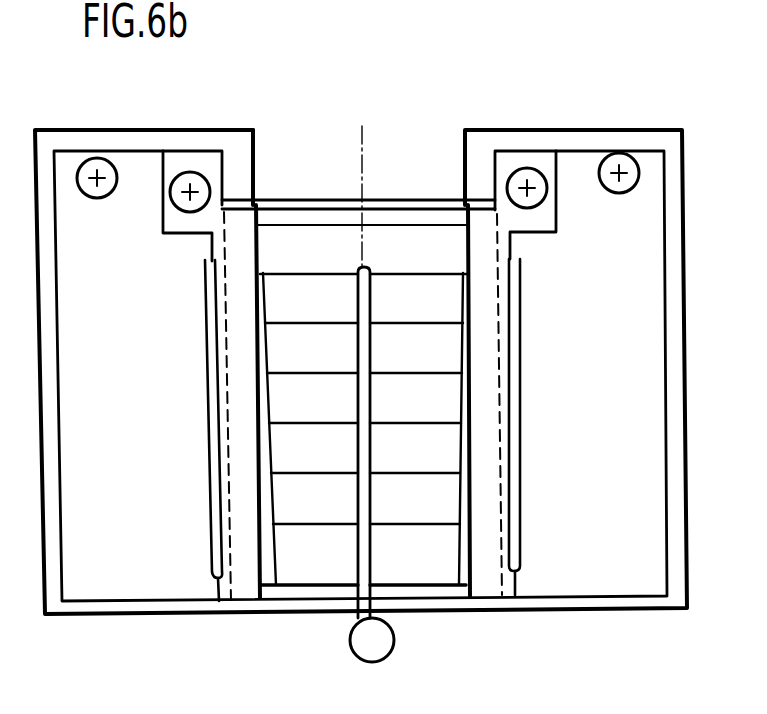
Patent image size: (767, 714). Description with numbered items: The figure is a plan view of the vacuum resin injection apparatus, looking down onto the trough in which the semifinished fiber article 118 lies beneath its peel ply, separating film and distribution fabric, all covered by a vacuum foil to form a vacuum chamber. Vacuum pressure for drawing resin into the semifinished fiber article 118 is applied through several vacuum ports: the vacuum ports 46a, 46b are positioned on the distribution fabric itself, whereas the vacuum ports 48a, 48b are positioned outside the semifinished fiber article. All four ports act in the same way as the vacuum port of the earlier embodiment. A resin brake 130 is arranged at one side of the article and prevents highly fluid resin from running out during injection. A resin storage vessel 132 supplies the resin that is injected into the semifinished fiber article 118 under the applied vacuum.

The vacuum port 48a is at (105, 172).
The vacuum port 46a is at (192, 182).
The vacuum port 46b is at (538, 172).
The vacuum port 48b is at (630, 165).
The semifinished fiber article 118 is at (418, 577).
The resin brake 130 is at (527, 539).
The resin storage vessel 132 is at (382, 644).